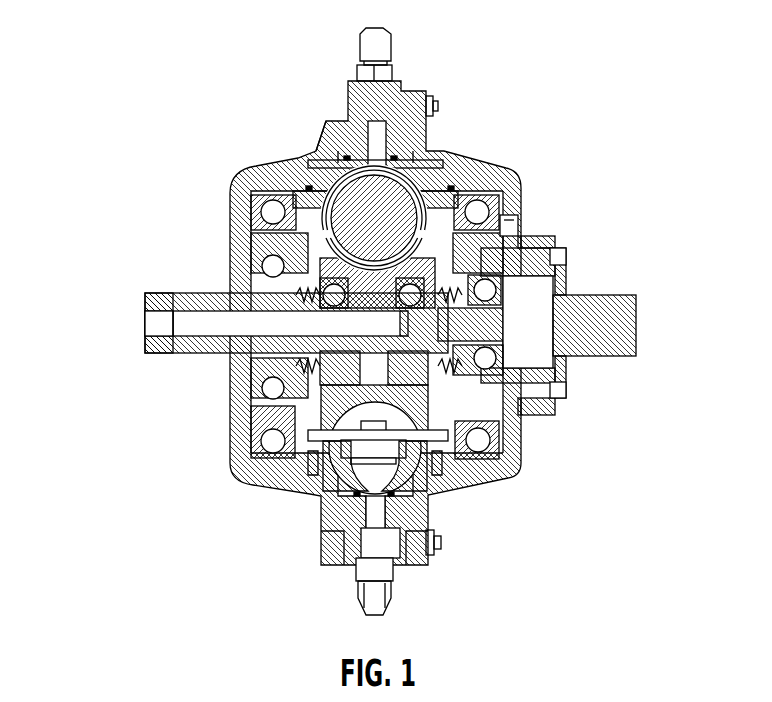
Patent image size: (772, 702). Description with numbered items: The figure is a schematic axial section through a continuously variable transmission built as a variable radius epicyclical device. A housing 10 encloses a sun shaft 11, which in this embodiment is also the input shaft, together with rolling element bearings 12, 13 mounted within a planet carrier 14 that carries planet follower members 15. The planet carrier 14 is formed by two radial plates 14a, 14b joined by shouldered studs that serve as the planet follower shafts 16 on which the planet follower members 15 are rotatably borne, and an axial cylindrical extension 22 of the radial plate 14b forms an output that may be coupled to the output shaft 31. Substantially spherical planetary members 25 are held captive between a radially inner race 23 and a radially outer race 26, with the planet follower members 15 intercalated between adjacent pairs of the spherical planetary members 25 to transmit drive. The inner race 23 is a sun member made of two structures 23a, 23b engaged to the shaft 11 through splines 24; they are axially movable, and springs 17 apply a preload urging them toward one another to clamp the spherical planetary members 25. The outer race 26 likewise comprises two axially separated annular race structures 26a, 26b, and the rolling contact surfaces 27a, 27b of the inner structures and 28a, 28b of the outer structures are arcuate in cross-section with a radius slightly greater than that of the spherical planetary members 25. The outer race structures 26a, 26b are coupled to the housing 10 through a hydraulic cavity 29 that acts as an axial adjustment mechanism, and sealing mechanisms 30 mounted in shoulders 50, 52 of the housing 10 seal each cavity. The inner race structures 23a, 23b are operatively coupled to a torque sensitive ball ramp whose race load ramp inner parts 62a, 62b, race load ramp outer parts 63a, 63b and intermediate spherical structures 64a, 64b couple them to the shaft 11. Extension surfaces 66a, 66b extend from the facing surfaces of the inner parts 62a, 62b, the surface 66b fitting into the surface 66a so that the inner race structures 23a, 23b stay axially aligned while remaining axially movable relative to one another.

The housing 10 is at (325, 152).
The sun shaft 11 is at (150, 290).
The rolling element bearing 12 is at (622, 310).
The rolling element bearing 13 is at (262, 300).
The planet carrier 14 is at (462, 222).
The radial plate 14a is at (300, 440).
The radial plate 14b is at (436, 440).
The planet follower member 15 is at (332, 470).
The planet follower shaft 16 is at (420, 470).
The spring 17 is at (300, 318).
The axial cylindrical extension 22 is at (548, 407).
The radially inner race 23 is at (250, 247).
The radially inner race structure 23a is at (266, 262).
The radially inner race structure 23b is at (515, 268).
The spline 24 is at (320, 320).
The spherical planetary member 25 is at (322, 212).
The radially outer race 26 is at (368, 145).
The radially outer race structure 26a is at (310, 170).
The radially outer race structure 26b is at (432, 160).
The rolling contact surface 27a is at (248, 238).
The rolling contact surface 27b is at (550, 246).
The rolling contact surface 28a is at (292, 197).
The rolling contact surface 28b is at (428, 186).
The hydraulic cavity 29 is at (330, 160).
The sealing mechanism 30 is at (346, 148).
The output shaft 31 is at (620, 290).
The shoulder 50 is at (338, 148).
The shoulder 52 is at (296, 185).
The race load ramp inner part 62a is at (310, 372).
The race load ramp inner part 62b is at (540, 363).
The race load ramp outer part 63a is at (350, 340).
The race load ramp outer part 63b is at (590, 300).
The intermediate spherical structure 64a is at (330, 302).
The intermediate spherical structure 64b is at (600, 330).
The extension surface 66a is at (300, 392).
The extension surface 66b is at (535, 382).